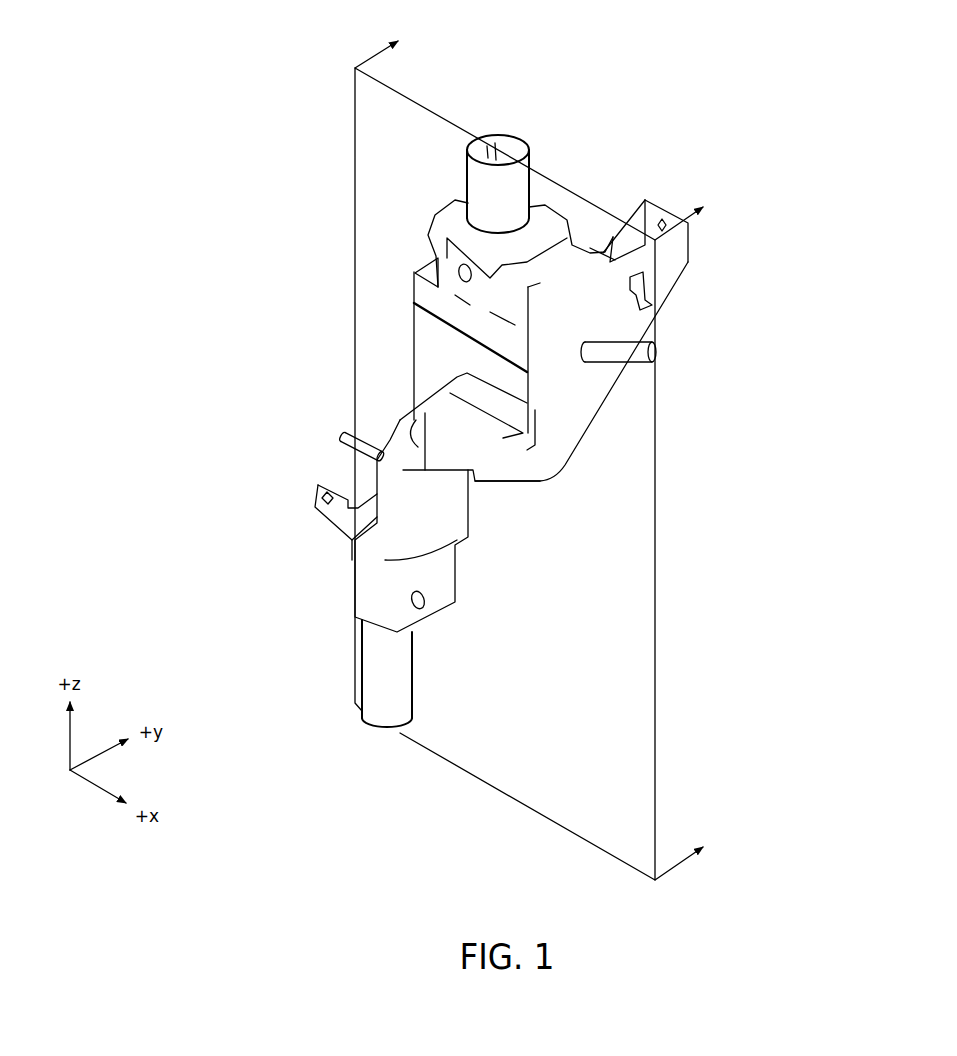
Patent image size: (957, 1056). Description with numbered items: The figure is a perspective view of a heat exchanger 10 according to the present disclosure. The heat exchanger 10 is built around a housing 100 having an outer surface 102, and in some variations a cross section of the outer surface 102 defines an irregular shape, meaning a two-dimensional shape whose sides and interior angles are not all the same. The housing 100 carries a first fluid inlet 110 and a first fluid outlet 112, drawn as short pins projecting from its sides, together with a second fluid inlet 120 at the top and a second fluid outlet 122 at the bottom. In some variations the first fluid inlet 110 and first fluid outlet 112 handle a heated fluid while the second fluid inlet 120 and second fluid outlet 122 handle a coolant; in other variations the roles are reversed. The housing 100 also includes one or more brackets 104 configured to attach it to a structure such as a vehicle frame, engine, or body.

The heat exchanger 10 is at (783, 132).
The housing 100 is at (580, 392).
The outer surface 102 is at (521, 466).
The bracket 104 is at (657, 197).
The first fluid inlet 110 is at (340, 436).
The first fluid outlet 112 is at (662, 352).
The second fluid inlet 120 is at (529, 139).
The second fluid outlet 122 is at (415, 708).